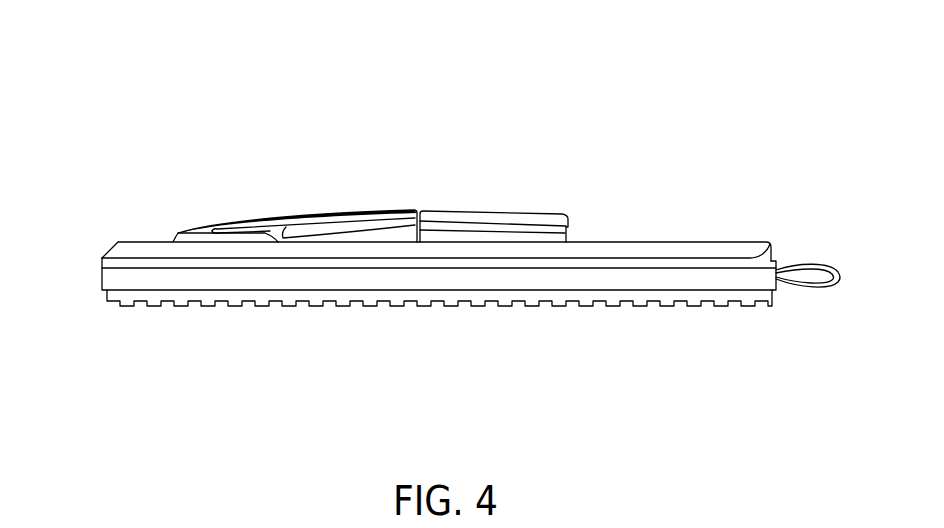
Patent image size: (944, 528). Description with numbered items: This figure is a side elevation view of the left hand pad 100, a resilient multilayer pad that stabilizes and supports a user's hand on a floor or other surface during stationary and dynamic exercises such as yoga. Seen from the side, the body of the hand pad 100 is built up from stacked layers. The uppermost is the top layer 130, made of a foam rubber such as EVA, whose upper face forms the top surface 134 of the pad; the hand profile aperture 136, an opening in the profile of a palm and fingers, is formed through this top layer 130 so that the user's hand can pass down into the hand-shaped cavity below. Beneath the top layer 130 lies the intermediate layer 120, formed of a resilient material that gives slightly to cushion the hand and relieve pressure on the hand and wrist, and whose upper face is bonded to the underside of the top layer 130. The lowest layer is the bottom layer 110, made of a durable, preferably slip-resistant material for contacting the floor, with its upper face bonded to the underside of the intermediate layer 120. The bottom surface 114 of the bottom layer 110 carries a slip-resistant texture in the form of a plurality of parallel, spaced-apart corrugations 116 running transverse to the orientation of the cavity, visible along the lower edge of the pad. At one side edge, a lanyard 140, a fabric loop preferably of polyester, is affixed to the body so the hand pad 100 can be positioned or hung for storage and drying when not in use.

The hand pad 100 is at (534, 104).
The bottom layer 110 is at (426, 336).
The bottom surface 114 is at (439, 336).
The corrugations 116 is at (255, 308).
The intermediate layer 120 is at (100, 277).
The top layer 130 is at (103, 256).
The top surface 134 is at (181, 232).
The hand profile aperture 136 is at (362, 211).
The lanyard 140 is at (792, 268).